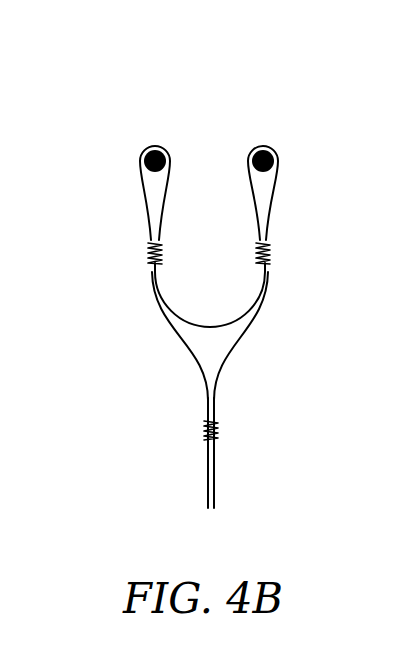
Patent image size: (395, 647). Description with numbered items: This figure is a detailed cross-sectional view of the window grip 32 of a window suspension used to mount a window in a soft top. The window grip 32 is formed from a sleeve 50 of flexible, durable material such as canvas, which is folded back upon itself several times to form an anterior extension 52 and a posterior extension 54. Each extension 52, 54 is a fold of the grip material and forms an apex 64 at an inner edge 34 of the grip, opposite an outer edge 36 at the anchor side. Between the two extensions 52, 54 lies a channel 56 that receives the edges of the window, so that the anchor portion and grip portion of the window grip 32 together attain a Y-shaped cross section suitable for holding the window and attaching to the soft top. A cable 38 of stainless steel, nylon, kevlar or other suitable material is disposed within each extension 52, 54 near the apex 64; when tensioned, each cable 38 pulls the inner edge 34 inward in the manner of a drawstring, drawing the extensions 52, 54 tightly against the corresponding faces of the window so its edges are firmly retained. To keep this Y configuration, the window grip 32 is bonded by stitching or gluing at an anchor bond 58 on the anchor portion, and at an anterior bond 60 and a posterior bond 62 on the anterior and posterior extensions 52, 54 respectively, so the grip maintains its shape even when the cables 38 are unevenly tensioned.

The window grip 32 is at (201, 290).
The inner edge 34 is at (158, 120).
The outer edge 36 is at (198, 495).
The cable 38 is at (147, 148).
The sleeve 50 is at (222, 362).
The anterior extension 52 is at (140, 158).
The posterior extension 54 is at (278, 158).
The channel 56 is at (252, 236).
The anchor bond 58 is at (218, 432).
The anterior bond 60 is at (148, 252).
The posterior bond 62 is at (270, 250).
The apex 64 is at (195, 135).